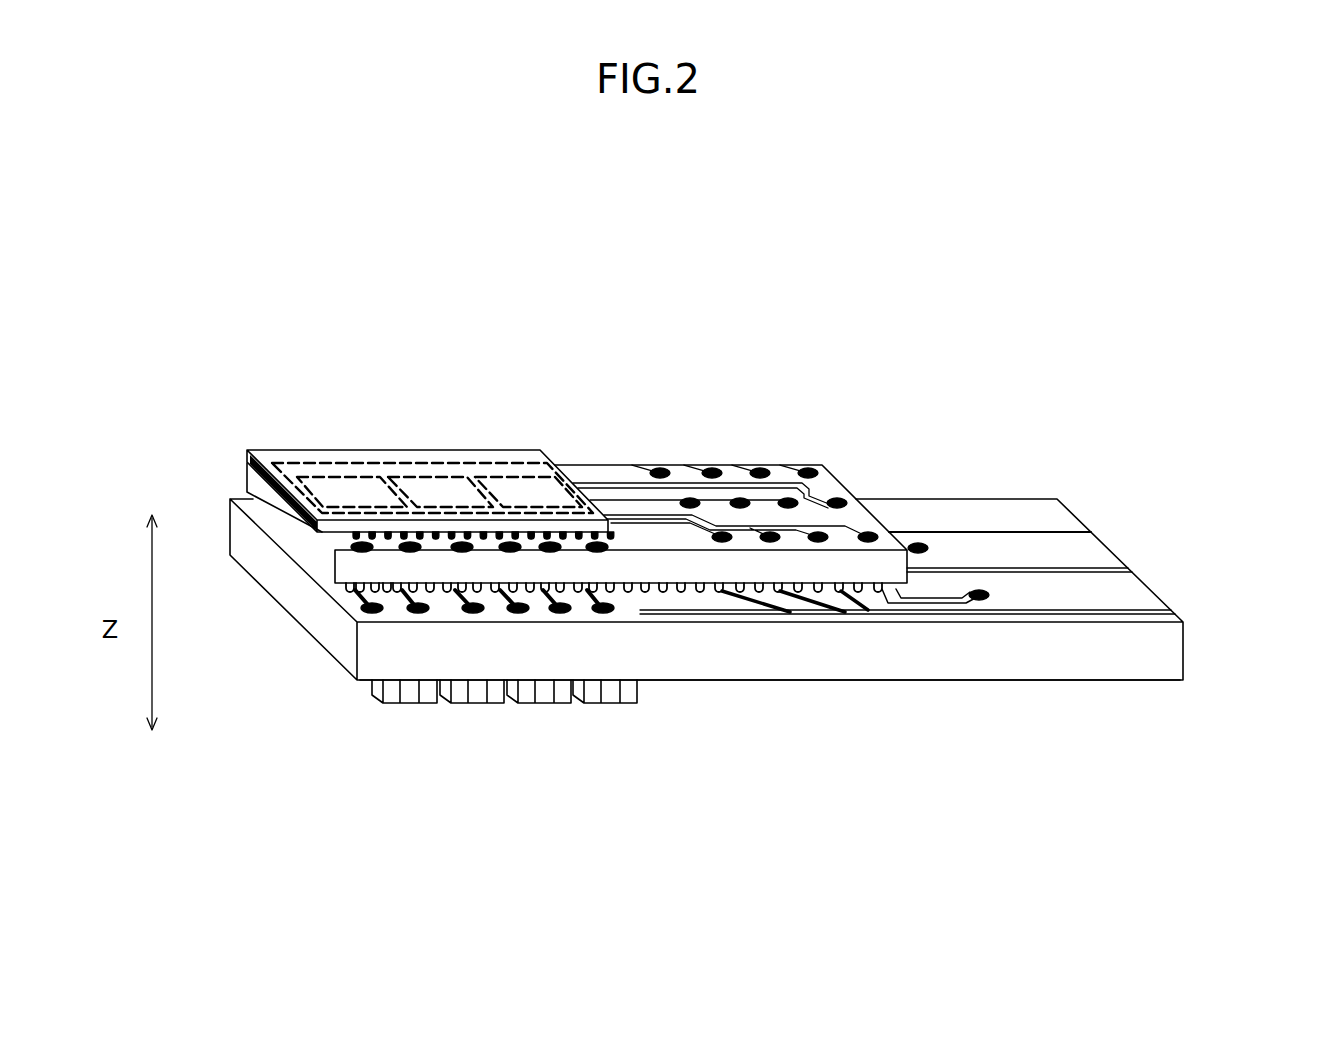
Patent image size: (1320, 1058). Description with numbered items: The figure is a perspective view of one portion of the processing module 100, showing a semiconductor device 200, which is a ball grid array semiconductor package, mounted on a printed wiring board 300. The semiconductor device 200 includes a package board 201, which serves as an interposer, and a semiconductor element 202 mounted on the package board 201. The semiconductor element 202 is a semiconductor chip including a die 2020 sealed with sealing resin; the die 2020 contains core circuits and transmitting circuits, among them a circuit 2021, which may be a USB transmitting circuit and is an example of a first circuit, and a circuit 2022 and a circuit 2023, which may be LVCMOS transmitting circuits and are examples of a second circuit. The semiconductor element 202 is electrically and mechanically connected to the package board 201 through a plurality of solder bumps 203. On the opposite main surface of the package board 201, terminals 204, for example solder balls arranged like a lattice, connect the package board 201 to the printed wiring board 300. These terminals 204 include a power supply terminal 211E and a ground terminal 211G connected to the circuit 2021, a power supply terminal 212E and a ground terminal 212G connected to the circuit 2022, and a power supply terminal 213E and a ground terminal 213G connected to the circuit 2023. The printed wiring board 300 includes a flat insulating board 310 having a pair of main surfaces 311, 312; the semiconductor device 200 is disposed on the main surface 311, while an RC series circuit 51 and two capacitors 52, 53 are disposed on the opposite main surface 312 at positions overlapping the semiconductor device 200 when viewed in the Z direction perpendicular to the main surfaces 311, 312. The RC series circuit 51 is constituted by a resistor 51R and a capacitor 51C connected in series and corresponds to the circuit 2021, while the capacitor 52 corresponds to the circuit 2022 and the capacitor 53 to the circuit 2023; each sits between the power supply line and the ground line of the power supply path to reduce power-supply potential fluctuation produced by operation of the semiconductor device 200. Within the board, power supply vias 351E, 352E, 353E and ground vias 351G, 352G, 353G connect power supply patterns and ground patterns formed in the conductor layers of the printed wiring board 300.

The processing module 100 is at (650, 285).
The semiconductor device 200 is at (730, 458).
The package board 201 is at (828, 490).
The semiconductor element 202 is at (541, 449).
The die 2020 is at (403, 460).
The circuit 2021 is at (522, 483).
The circuit 2022 is at (452, 493).
The circuit 2023 is at (343, 487).
The solder bumps 203 is at (247, 485).
The terminals 204 is at (888, 591).
The power supply terminal 211E is at (598, 586).
The ground terminal 211G is at (549, 584).
The power supply terminal 212E is at (451, 584).
The ground terminal 212G is at (499, 584).
The power supply terminal 213E is at (354, 584).
The ground terminal 213G is at (401, 584).
The printed wiring board 300 is at (1111, 547).
The insulating board 310 is at (1185, 652).
The main surface 311 is at (1130, 592).
The main surface 312 is at (1125, 680).
The power supply via 351E is at (612, 603).
The ground via 351G is at (569, 603).
The power supply via 352E is at (482, 603).
The ground via 352G is at (527, 603).
The power supply via 353E is at (381, 603).
The ground via 353G is at (427, 603).
The RC series circuit 51 is at (655, 758).
The resistor 51R is at (543, 707).
The capacitor 51C is at (610, 707).
The capacitor 52 is at (472, 707).
The capacitor 53 is at (410, 707).